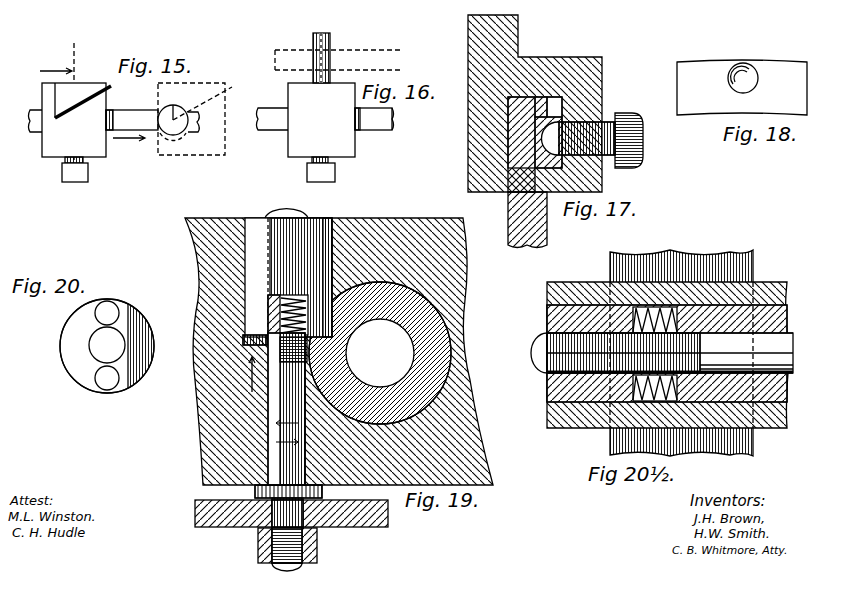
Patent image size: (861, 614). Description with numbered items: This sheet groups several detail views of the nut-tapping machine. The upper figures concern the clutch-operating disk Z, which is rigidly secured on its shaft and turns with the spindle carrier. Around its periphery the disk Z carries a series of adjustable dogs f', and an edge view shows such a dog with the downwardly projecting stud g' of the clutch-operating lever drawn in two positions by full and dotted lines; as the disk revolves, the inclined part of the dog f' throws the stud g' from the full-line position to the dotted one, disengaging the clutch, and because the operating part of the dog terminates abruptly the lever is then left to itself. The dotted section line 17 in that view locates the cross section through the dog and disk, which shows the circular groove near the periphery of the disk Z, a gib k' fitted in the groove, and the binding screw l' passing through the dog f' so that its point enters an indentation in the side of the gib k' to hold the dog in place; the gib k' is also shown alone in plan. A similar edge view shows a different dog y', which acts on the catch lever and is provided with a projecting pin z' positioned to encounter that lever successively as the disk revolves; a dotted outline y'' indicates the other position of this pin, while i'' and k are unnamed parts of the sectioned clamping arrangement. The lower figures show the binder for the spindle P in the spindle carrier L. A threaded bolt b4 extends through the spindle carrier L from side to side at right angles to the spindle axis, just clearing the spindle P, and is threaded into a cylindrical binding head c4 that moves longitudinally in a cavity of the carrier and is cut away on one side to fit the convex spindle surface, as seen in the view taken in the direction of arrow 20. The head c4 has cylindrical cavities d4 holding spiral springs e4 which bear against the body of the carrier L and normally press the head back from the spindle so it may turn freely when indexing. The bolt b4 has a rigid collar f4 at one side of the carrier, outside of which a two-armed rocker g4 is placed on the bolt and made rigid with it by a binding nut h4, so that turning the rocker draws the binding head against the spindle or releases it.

In FIG. 15, the section line for Fig. 17 is at (83, 101).
In FIG. 15, the adjustable peripheral dog f' is at (70, 120).
In FIG. 17, the adjustable peripheral dog f' is at (521, 103).
In FIG. 15, the disk Z is at (132, 115).
In FIG. 16, the disk Z is at (275, 124).
In FIG. 17, the disk Z is at (543, 222).
In FIG. 15, the stud g' is at (195, 119).
In FIG. 15, the binding screw l' is at (75, 181).
In FIG. 17, the binding screw l' is at (592, 128).
In FIG. 16, the adjustable dog y' is at (321, 120).
In FIG. 16, the projecting pin z' is at (328, 49).
In FIG. 16, the stem guide y'' is at (338, 49).
In FIG. 17, the inner slide i'' is at (530, 110).
In FIG. 17, the clamp piece k is at (548, 153).
In FIG. 18, the gib k' is at (742, 87).
In FIG. 19, the spindle carrier L is at (391, 224).
The spindle carrier L is at (588, 420).
In FIG. 19, the shaft P is at (408, 385).
The shaft P is at (722, 263).
In FIG. 19, the cylindrical binding head c4 is at (258, 218).
In FIG. 20, the cylindrical binding head c4 is at (72, 360).
The cylindrical binding head c4 is at (550, 322).
In FIG. 19, the spiral spring e4 is at (273, 310).
The spiral spring e4 is at (678, 318).
In FIG. 19, the cylindrical cavity d4 is at (268, 337).
In FIG. 20, the cylindrical cavity d4 is at (109, 306).
In FIG. 19, the threaded bolt b4 is at (287, 452).
The threaded bolt b4 is at (789, 343).
In FIG. 19, the arrow for Fig. 20 is at (242, 374).
In FIG. 19, the rigid collar f4 is at (257, 493).
In FIG. 19, the rocker g4 is at (212, 526).
In FIG. 19, the binding nut h4 is at (320, 546).